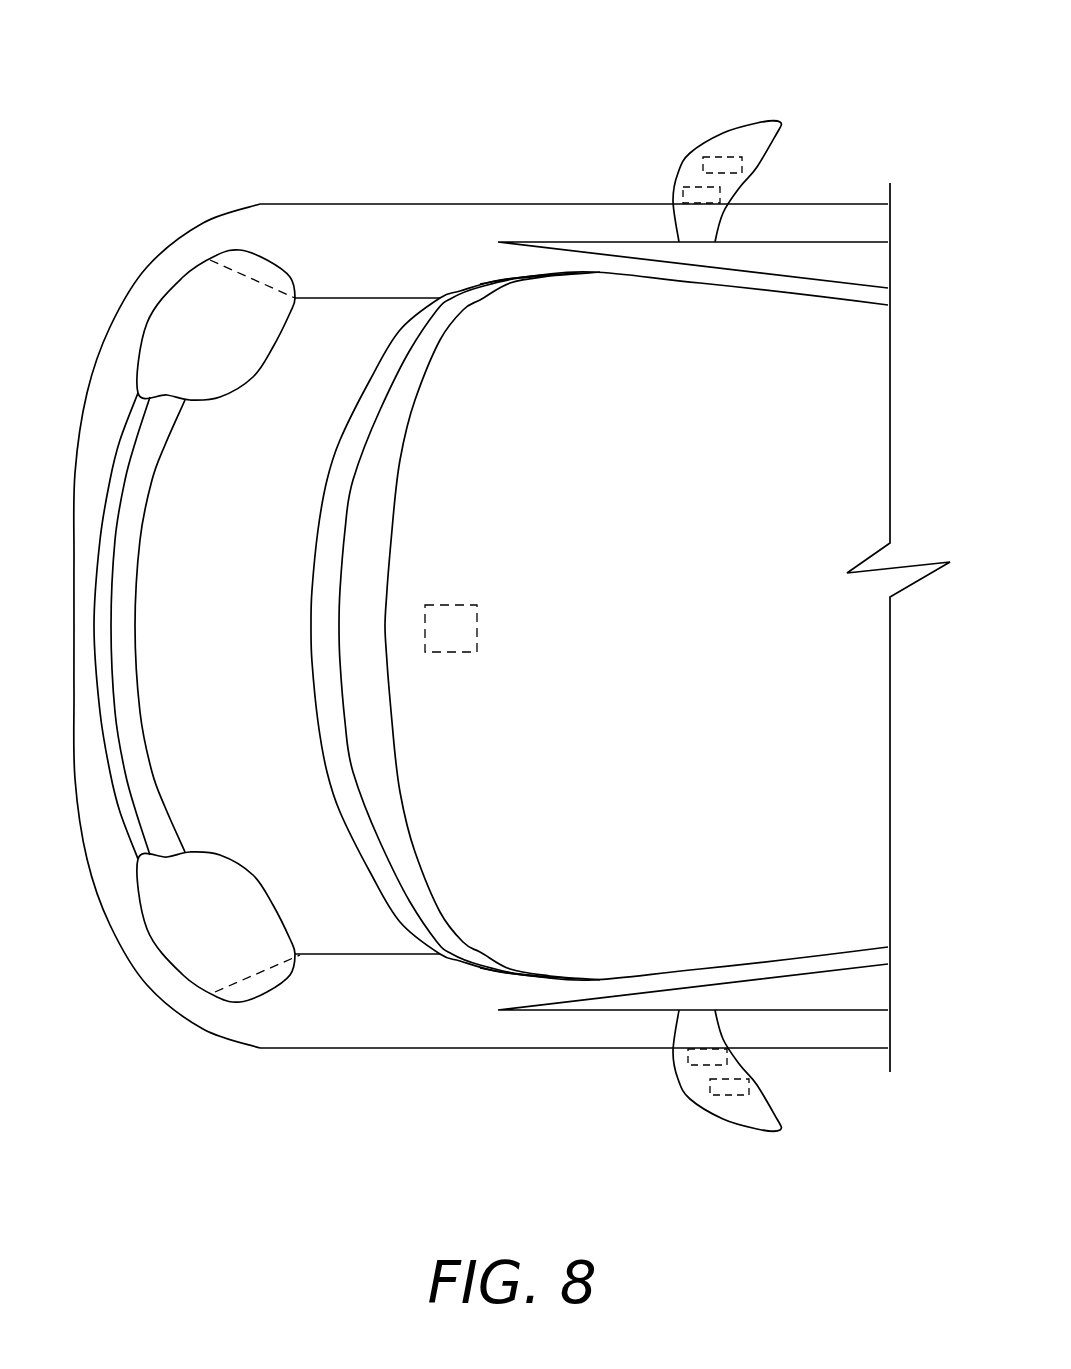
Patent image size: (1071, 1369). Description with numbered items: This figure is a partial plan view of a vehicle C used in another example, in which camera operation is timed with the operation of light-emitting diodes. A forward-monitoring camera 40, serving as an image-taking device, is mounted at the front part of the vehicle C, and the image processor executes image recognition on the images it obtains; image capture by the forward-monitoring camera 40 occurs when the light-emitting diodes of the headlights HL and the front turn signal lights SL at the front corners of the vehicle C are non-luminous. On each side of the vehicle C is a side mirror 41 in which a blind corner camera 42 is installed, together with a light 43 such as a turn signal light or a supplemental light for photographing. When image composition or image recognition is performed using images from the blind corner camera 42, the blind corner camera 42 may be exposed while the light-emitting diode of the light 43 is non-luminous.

The forward-monitoring camera 40 is at (458, 605).
The side mirror 41 is at (780, 122).
The blind corner camera 42 is at (720, 157).
The light 43 is at (697, 187).
The vehicle C is at (373, 203).
The headlights HL is at (227, 367).
The front turn signal lights SL is at (255, 268).